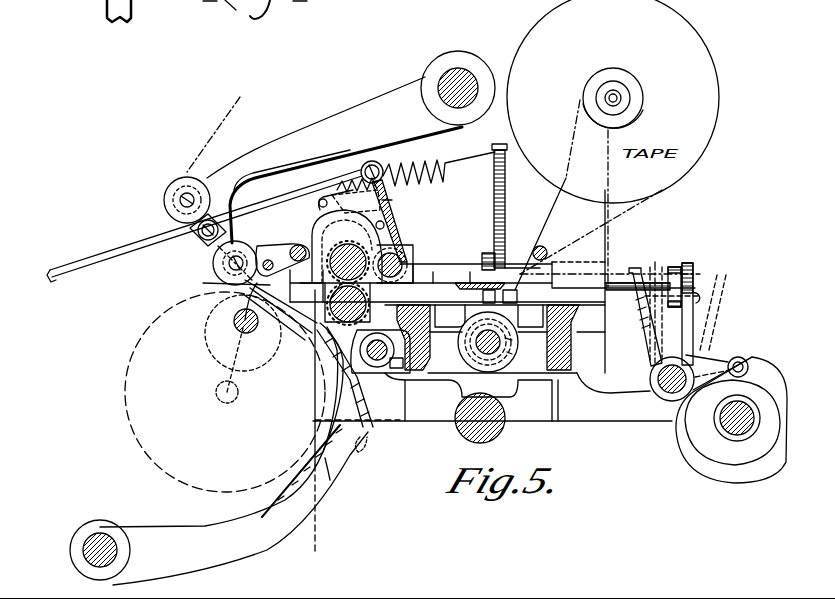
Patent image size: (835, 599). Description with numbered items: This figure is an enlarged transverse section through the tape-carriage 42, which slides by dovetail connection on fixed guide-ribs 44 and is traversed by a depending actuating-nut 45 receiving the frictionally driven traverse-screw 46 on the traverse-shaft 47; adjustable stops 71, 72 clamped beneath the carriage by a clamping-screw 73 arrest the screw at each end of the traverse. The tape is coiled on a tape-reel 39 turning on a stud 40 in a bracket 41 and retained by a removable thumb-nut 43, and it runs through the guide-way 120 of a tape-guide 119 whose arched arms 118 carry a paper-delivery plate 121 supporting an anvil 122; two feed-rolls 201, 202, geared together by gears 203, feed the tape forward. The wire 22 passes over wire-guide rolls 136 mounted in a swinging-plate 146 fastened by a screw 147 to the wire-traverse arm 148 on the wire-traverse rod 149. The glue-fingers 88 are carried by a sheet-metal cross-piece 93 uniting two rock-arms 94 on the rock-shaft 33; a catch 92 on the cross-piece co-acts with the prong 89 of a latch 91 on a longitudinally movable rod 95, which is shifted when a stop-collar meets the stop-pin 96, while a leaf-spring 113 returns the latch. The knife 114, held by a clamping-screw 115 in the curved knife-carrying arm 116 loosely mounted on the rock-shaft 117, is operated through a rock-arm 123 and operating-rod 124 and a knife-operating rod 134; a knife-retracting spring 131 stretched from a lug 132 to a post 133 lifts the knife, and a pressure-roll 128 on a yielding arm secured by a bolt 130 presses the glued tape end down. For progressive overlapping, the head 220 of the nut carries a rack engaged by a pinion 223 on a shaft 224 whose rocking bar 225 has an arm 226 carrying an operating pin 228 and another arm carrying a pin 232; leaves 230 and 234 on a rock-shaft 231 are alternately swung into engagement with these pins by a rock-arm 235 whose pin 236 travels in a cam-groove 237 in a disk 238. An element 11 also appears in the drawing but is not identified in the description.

The shaft 11 is at (505, 426).
The wire 22 is at (218, 117).
The rock-shaft 33 is at (100, 535).
The tape-reel 39 is at (687, 38).
The stud 40 is at (620, 99).
The bracket 41 is at (570, 220).
The tape-carriage 42 is at (445, 281).
The thumb-nut 43 is at (620, 75).
The guide-ribs 44 is at (428, 362).
The actuating-nut 45 is at (518, 338).
The traverse-screw 46 is at (519, 352).
The traverse-shaft 47 is at (493, 346).
The stop 71 is at (502, 323).
The stop 72 is at (480, 292).
The clamping-screw 73 is at (515, 268).
The glue-fingers 88 is at (282, 336).
The prong 89 is at (362, 368).
The latch 91 is at (394, 380).
The catch 92 is at (323, 343).
The cross-piece 93 is at (323, 460).
The rock-arms 94 is at (234, 454).
The rod 95 is at (405, 380).
The stop-pin 96 is at (393, 334).
The leaf-spring 113 is at (492, 400).
The knife 114 is at (258, 318).
The clamping-screw 115 is at (236, 301).
The knife-carrying arm 116 is at (384, 225).
The rock-shaft 117 is at (403, 265).
The arched arms 118 is at (396, 248).
The tape-guide 119 is at (434, 272).
The guide-way 120 is at (470, 270).
The paper-delivery plate 121 is at (336, 267).
The anvil 122 is at (447, 292).
The rock-arm 123 is at (400, 199).
The operating-rod 124 is at (283, 195).
The pressure-roll 128 is at (220, 278).
The bolt 130 is at (285, 248).
The knife-retracting spring 131 is at (416, 177).
The lug 132 is at (323, 198).
The post 133 is at (505, 205).
The knife-operating rod 134 is at (386, 233).
The wire-guide rolls 136 is at (165, 202).
The swinging-plate 146 is at (208, 242).
The screw 147 is at (197, 237).
The wire-traverse arm 148 is at (380, 97).
The wire-traverse rod 149 is at (463, 78).
The feed-roll 201 is at (375, 292).
The feed-roll 202 is at (313, 323).
The gears 203 is at (476, 283).
The head 220 is at (488, 318).
The pinion 223 is at (487, 252).
The shaft 224 is at (622, 272).
The rocking bar 225 is at (690, 266).
The arm 226 is at (678, 306).
The operating pin 228 is at (700, 300).
The leaf 230 is at (705, 355).
The rock-shaft 231 is at (650, 380).
The pin 232 is at (660, 265).
The leaf 234 is at (647, 327).
The rock-arm 235 is at (712, 363).
The pin 236 is at (746, 361).
The cam-groove 237 is at (690, 440).
The disk 238 is at (696, 472).